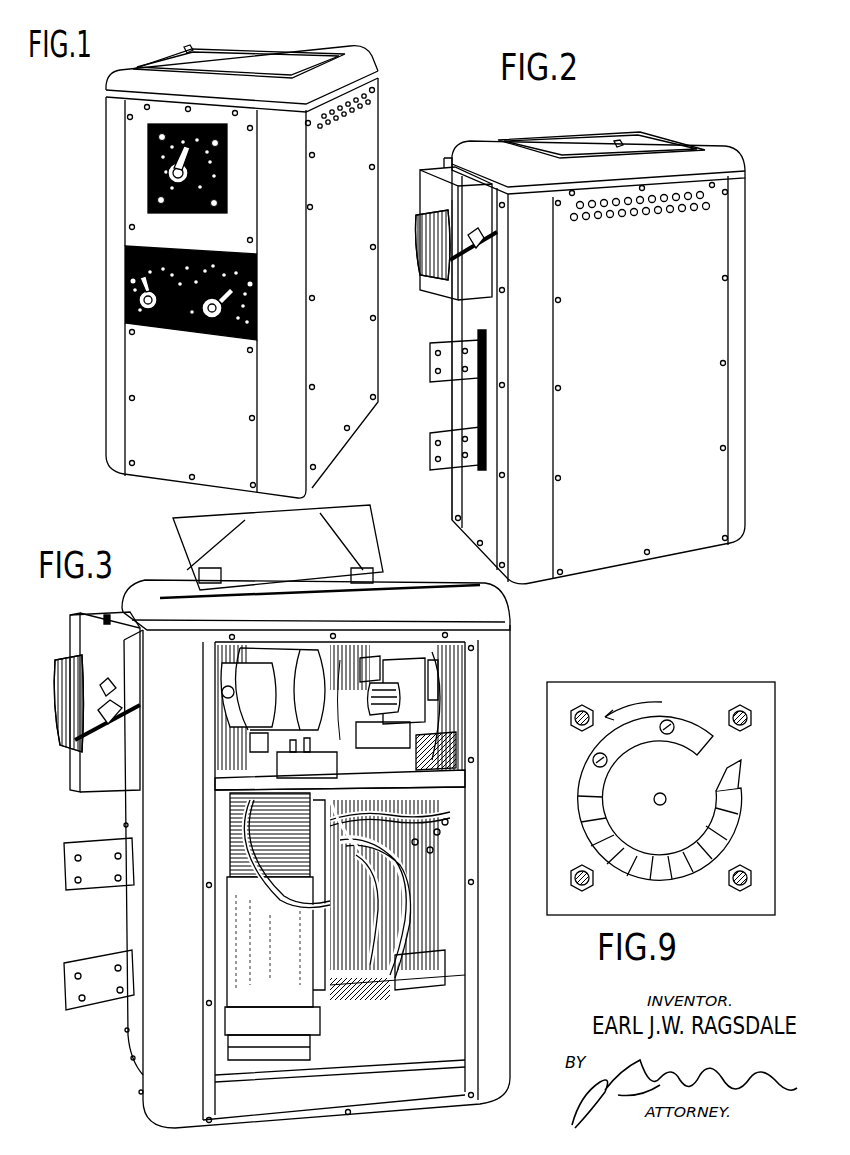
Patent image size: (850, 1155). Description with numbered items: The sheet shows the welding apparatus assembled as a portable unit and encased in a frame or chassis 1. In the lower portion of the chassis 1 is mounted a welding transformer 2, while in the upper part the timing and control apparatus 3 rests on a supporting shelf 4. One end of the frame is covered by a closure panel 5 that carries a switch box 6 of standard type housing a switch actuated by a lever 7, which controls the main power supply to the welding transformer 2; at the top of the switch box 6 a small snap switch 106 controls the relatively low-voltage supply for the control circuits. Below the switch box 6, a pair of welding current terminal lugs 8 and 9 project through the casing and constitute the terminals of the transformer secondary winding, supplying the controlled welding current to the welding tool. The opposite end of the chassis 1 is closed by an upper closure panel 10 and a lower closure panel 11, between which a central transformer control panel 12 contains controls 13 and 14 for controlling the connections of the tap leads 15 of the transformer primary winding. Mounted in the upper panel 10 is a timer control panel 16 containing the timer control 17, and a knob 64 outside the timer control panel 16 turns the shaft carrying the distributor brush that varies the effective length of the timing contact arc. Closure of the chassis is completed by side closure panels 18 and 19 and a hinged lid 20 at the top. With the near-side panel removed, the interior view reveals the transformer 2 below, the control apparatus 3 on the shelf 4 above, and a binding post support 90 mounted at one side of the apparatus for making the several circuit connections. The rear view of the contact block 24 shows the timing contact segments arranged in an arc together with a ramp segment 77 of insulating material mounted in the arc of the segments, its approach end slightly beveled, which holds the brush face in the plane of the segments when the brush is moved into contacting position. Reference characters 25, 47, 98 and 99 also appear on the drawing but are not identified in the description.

In FIG. 1, the frame or chassis 1 is at (300, 168).
In FIG. 2, the frame or chassis 1 is at (738, 222).
In FIG. 3, the frame or chassis 1 is at (505, 988).
In FIG. 3, the welding transformer 2 is at (243, 935).
In FIG. 3, the timing and control apparatus 3 is at (380, 648).
In FIG. 3, the supporting shelf 4 is at (440, 790).
In FIG. 2, the closure panel 5 is at (462, 490).
In FIG. 3, the closure panel 5 is at (128, 808).
In FIG. 2, the switch box 6 is at (426, 195).
In FIG. 3, the switch box 6 is at (100, 642).
In FIG. 2, the lever 7 is at (447, 258).
In FIG. 3, the lever 7 is at (78, 708).
In FIG. 2, the welding current terminal lug 8 is at (430, 370).
In FIG. 3, the welding current terminal lug 8 is at (102, 886).
In FIG. 2, the welding current terminal lug 9 is at (430, 456).
In FIG. 3, the welding current terminal lug 9 is at (72, 1000).
In FIG. 1, the upper closure panel 10 is at (130, 152).
In FIG. 1, the lower closure panel 11 is at (133, 434).
In FIG. 1, the transformer control panel 12 is at (172, 311).
In FIG. 1, the control 13 is at (146, 324).
In FIG. 1, the control 14 is at (209, 336).
In FIG. 3, the tap leads 15 is at (433, 858).
In FIG. 1, the timer control panel 16 is at (150, 165).
In FIG. 1, the timer control 17 is at (152, 183).
In FIG. 2, the side closure panel 18 is at (725, 345).
In FIG. 1, the side closure panel 19 is at (366, 148).
In FIG. 1, the hinged lid 20 is at (277, 53).
In FIG. 2, the hinged lid 20 is at (656, 145).
In FIG. 3, the hinged lid 20 is at (384, 545).
In FIG. 9, the contact block 24 is at (697, 897).
In FIG. 1, the screw 25 is at (221, 205).
In FIG. 3, the motor 47 is at (304, 702).
In FIG. 1, the knob 64 is at (168, 170).
In FIG. 9, the ramp segment 77 is at (682, 725).
In FIG. 3, the binding post support 90 is at (307, 758).
In FIG. 1, the indicator lamp 98 is at (126, 281).
In FIG. 1, the indicator lamp 99 is at (255, 284).
In FIG. 2, the snap switch 106 is at (450, 157).
In FIG. 3, the snap switch 106 is at (107, 614).